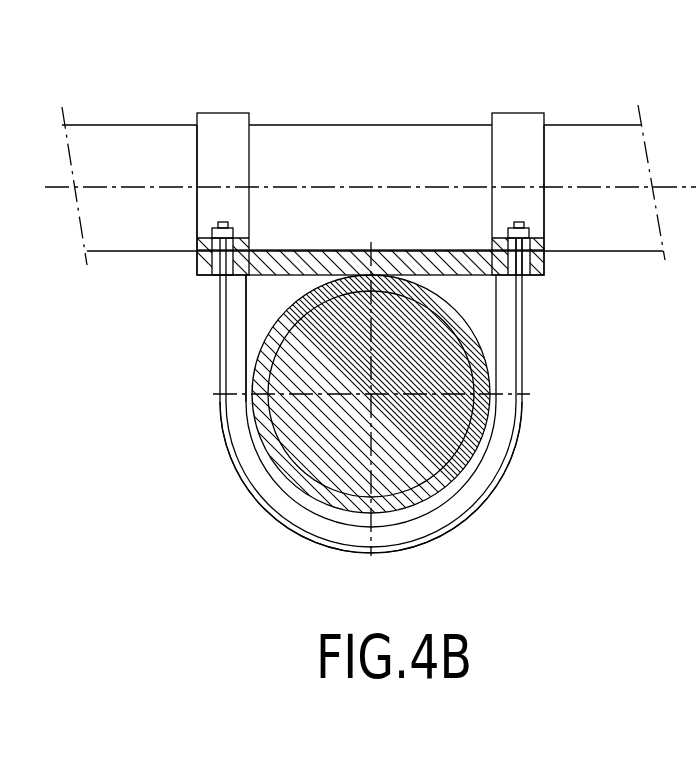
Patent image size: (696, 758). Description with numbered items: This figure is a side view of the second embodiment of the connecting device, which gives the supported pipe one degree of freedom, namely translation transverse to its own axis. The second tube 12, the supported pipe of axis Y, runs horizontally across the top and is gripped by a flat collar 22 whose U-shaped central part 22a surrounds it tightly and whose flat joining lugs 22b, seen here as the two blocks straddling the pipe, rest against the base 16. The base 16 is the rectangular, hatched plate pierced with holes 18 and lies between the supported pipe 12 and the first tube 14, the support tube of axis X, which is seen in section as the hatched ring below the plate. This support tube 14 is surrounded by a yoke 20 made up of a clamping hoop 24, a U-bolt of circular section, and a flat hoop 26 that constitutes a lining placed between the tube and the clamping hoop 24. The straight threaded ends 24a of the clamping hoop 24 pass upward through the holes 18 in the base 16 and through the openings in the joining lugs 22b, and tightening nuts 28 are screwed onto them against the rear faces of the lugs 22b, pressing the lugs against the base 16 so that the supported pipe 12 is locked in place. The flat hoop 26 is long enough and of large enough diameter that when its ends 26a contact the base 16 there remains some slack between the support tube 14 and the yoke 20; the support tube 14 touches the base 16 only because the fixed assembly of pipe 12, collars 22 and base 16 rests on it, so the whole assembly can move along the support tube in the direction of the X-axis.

The second tube 12 is at (342, 135).
The first tube 14 is at (322, 500).
The base 16 is at (423, 250).
The holes 18 is at (216, 278).
The yoke 20 is at (508, 470).
The flat collar 22 is at (192, 104).
The U-shaped central part 22a is at (228, 148).
The joining lugs 22b is at (545, 248).
The clamping hoop 24 is at (243, 485).
The threaded ends 24a is at (527, 278).
The flat hoop 26 is at (457, 507).
The ends of the flat hoop 26a is at (237, 298).
The tightening nut 28 is at (210, 233).